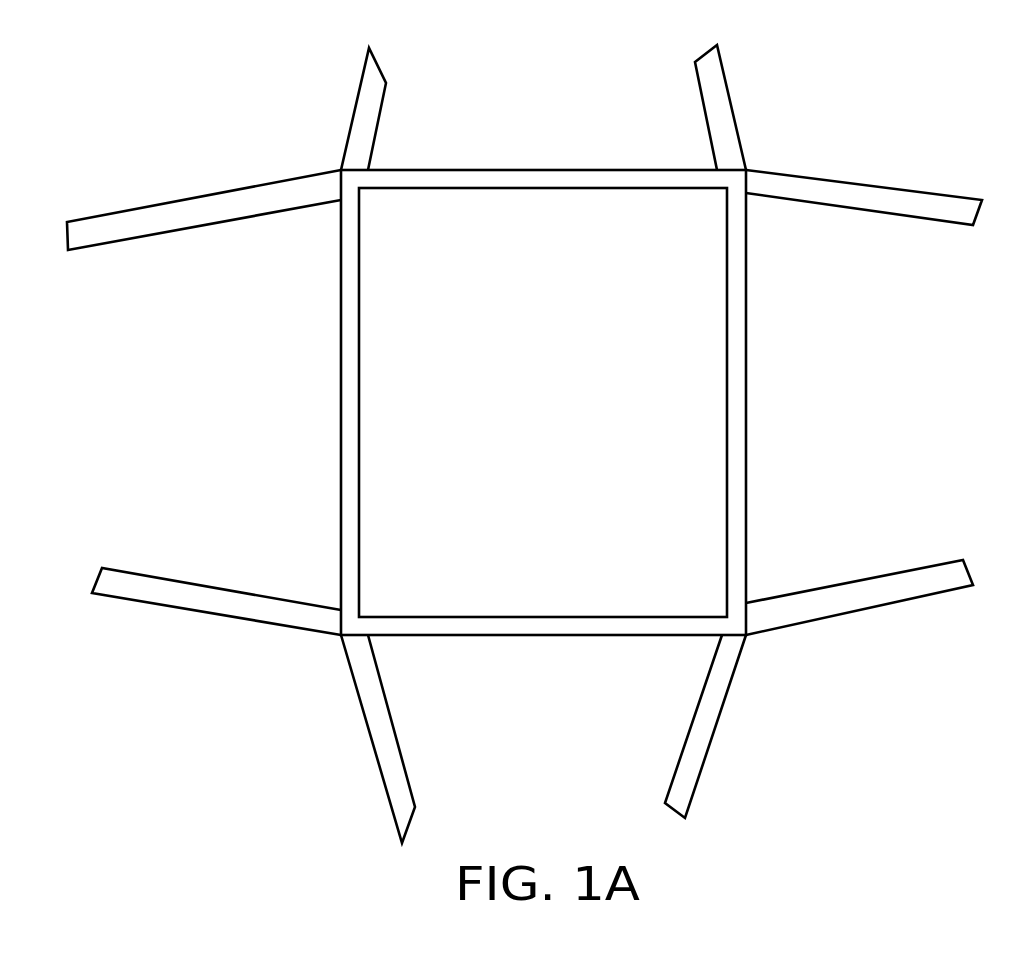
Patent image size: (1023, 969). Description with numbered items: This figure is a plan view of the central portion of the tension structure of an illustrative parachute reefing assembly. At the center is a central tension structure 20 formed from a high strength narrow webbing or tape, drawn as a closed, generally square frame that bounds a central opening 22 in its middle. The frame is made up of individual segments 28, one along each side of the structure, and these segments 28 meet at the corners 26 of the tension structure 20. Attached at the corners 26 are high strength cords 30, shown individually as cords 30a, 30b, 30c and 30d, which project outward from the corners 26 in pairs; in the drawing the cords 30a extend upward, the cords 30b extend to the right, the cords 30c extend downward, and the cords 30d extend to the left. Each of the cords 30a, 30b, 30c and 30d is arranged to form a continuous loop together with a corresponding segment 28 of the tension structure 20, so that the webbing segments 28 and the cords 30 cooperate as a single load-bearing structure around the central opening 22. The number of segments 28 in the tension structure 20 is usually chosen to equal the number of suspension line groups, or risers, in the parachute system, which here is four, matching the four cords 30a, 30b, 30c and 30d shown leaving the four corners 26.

The central tension structure 20 is at (550, 399).
The central opening 22 is at (634, 332).
The corners 26 is at (341, 170).
The segment 28 is at (550, 399).
The high strength cords 30 is at (532, 431).
The high strength cord 30a is at (372, 105).
The high strength cord 30b is at (860, 183).
The high strength cord 30c is at (388, 752).
The high strength cord 30d is at (197, 225).